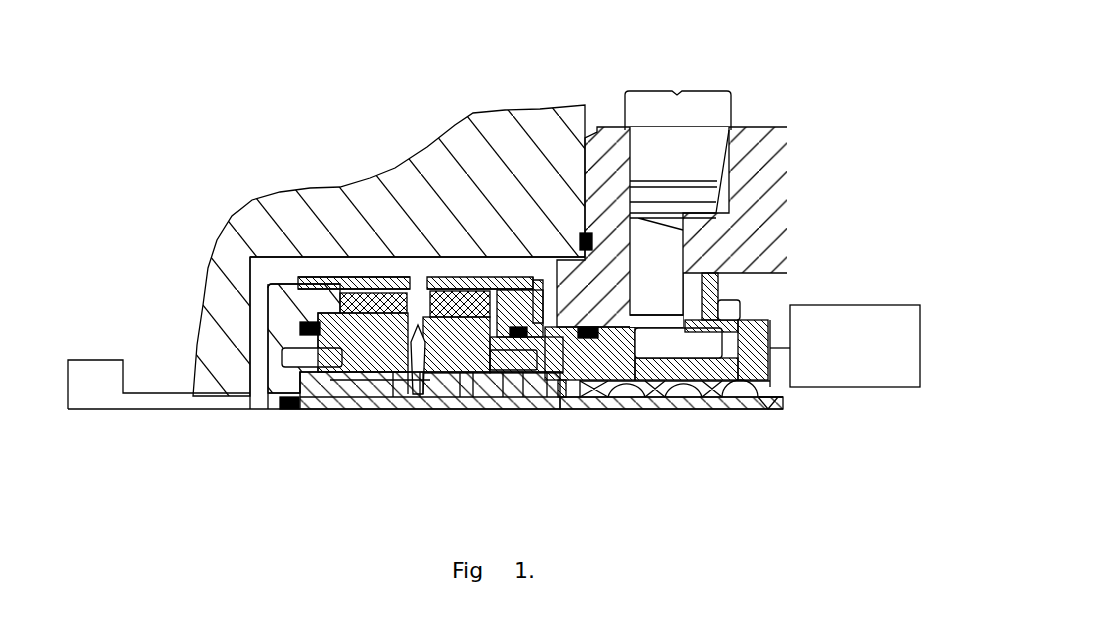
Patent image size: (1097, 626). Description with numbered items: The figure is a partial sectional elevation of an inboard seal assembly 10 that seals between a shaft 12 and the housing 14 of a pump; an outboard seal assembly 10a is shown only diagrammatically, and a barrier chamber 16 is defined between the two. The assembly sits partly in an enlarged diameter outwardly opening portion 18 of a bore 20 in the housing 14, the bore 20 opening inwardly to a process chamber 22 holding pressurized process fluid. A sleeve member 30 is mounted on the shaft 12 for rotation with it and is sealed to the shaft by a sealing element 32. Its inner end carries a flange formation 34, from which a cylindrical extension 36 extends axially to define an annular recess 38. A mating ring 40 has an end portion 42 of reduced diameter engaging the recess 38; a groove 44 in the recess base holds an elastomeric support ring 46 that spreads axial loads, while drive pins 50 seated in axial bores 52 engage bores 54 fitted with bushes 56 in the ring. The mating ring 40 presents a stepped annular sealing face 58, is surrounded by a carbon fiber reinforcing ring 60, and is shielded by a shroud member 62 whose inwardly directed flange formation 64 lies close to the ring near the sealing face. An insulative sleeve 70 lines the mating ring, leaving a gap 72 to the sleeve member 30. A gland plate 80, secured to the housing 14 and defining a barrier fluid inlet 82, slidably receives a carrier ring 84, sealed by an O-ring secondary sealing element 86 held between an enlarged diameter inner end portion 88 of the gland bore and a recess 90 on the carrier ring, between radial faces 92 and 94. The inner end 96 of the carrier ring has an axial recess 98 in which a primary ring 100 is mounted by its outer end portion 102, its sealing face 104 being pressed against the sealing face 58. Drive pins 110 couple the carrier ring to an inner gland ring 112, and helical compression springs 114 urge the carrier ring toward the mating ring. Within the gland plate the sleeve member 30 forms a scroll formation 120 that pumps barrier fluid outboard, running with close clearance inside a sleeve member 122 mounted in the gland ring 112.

The inboard seal assembly 10 is at (832, 157).
The outboard seal assembly 10a is at (858, 387).
The shaft 12 is at (183, 430).
The housing 14 is at (245, 222).
The barrier chamber 16 is at (757, 303).
The enlarged diameter outwardly opening portion 18 is at (273, 253).
The bore 20 is at (220, 395).
The process chamber 22 is at (159, 384).
The sleeve member 30 is at (396, 405).
The sealing element 32 is at (282, 409).
The flange formation 34 is at (265, 312).
The cylindrical extension 36 is at (290, 277).
The annular recess 38 is at (262, 330).
The mating ring 40 is at (367, 382).
The end portion 42 is at (265, 250).
The groove 44 is at (252, 268).
The support ring 46 is at (250, 292).
The drive pins 50 is at (300, 327).
The axial bores 52 is at (290, 357).
The bores 54 is at (316, 393).
The bushes 56 is at (293, 403).
The sealing face 58 is at (397, 383).
The reinforcing ring 60 is at (365, 280).
The shroud member 62 is at (314, 296).
The flange formation 64 is at (405, 300).
The sleeve 70 is at (338, 385).
The gap 72 is at (352, 390).
The gland plate 80 is at (767, 137).
The inlet 82 is at (700, 110).
The carrier ring 84 is at (583, 400).
The secondary sealing element 86 is at (582, 233).
The enlarged diameter inner end portion 88 is at (598, 320).
The recess 90 is at (637, 400).
The radial face 92 is at (620, 400).
The radial face 94 is at (633, 313).
The inner end 96 is at (533, 277).
The axial recess 98 is at (562, 398).
The primary ring 100 is at (462, 395).
The outer end portion 102 is at (483, 292).
The sealing face 104 is at (432, 395).
The drive pins 110 is at (763, 408).
The inner gland ring 112 is at (790, 262).
The helical compression springs 114 is at (705, 405).
The scroll formation 120 is at (683, 405).
The sleeve member 122 is at (750, 408).